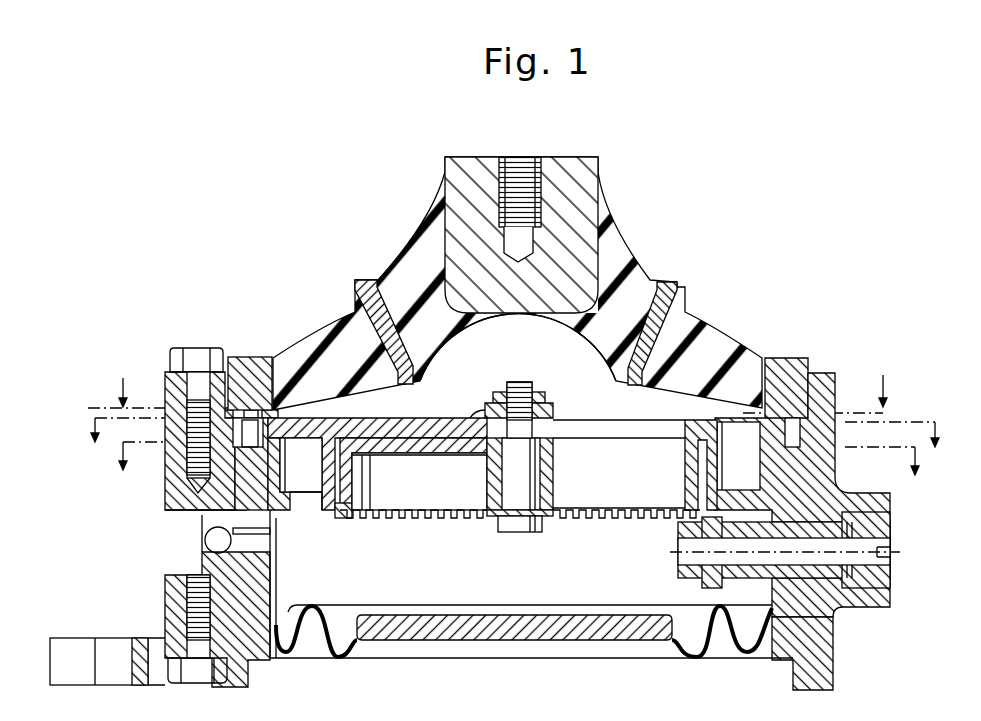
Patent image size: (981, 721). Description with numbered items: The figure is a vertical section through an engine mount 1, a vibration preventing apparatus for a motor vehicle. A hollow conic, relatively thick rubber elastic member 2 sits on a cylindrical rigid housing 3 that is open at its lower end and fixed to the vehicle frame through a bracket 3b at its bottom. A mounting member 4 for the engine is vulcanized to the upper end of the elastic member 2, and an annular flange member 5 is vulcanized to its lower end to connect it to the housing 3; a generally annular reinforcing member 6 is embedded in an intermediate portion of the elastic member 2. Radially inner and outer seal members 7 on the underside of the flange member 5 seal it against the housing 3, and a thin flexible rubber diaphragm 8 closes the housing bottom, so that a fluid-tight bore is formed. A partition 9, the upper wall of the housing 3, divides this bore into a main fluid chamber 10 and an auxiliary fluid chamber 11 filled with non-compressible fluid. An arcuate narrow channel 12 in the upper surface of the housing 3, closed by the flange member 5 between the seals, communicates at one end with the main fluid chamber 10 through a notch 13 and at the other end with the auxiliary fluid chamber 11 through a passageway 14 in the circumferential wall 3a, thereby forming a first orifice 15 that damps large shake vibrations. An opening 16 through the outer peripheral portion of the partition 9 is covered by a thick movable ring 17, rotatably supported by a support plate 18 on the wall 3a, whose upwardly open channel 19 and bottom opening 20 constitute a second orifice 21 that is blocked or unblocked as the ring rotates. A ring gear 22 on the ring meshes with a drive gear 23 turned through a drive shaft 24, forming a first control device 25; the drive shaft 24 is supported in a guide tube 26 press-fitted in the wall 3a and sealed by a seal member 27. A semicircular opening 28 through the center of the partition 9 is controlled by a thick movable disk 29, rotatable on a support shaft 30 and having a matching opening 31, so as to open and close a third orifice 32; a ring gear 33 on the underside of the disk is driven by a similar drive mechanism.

The engine mount 1 is at (700, 162).
The elastic member 2 is at (648, 252).
The housing 3 is at (838, 479).
The circumferential wall 3a is at (838, 612).
The bracket 3b is at (100, 638).
The mounting member 4 is at (583, 157).
The annular flange member 5 is at (250, 357).
The reinforcing member 6 is at (371, 283).
The seal members 7 is at (226, 410).
The diaphragm 8 is at (508, 660).
The partition 9 is at (455, 420).
The main fluid chamber 10 is at (533, 353).
The auxiliary fluid chamber 11 is at (532, 588).
The channel 12 is at (252, 447).
The notch 13 is at (786, 398).
The passageway 14 is at (248, 515).
The first orifice 15 is at (252, 418).
The opening 16 is at (725, 432).
The movable ring 17 is at (352, 478).
The support plate 18 is at (280, 535).
The channel 19 is at (317, 476).
The opening 20 is at (305, 493).
The second orifice 21 is at (312, 447).
The ring gear 22 is at (345, 520).
The drive gear 23 is at (690, 565).
The drive shaft 24 is at (885, 556).
The first control device 25 is at (662, 537).
The guide tube 26 is at (826, 518).
The seal member 27 is at (880, 530).
The semicircular opening 28 is at (553, 412).
The movable disk 29 is at (395, 436).
The support shaft 30 is at (513, 480).
The opening 31 is at (597, 447).
The third orifice 32 is at (635, 483).
The ring gear 33 is at (352, 518).